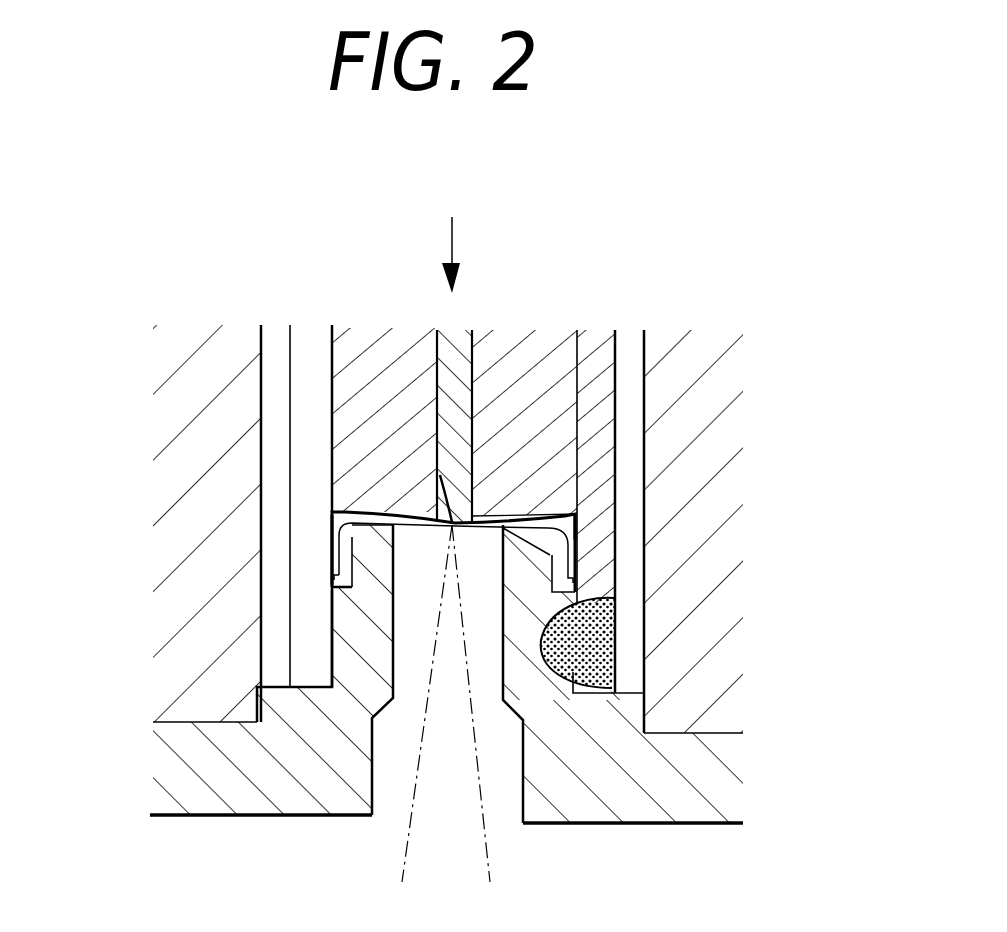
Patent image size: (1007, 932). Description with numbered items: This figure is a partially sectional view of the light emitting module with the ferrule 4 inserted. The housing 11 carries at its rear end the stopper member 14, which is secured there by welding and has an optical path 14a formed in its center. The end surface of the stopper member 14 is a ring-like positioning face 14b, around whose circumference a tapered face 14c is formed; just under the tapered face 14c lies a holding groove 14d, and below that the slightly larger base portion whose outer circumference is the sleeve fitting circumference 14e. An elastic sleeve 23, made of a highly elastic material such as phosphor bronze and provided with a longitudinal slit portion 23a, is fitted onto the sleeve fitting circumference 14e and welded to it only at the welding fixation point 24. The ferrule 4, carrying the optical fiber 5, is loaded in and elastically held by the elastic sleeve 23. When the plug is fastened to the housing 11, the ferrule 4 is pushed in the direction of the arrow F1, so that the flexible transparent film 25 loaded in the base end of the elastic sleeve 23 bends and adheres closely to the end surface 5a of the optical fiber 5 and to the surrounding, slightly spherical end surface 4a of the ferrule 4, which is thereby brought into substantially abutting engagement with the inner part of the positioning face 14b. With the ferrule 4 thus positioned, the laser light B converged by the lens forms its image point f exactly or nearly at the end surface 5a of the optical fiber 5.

The housing 11 is at (693, 546).
The welding fixation point 24 is at (605, 638).
The elastic sleeve 23 is at (603, 368).
The slit portion 23a is at (307, 378).
The ferrule 4 is at (503, 357).
The end surface of the ferrule 4a is at (521, 518).
The optical fiber 5 is at (442, 388).
The end surface of the optical fiber 5a is at (440, 475).
The stopper member 14 is at (232, 817).
The optical path 14a is at (396, 665).
The positioning face 14b is at (387, 527).
The tapered face 14c is at (437, 518).
The holding groove 14d is at (332, 553).
The sleeve fitting circumference 14e is at (347, 657).
The transparent film 25 is at (567, 517).
The image point f is at (437, 498).
The direction of pushing force F1 is at (449, 226).
The laser light B is at (485, 832).